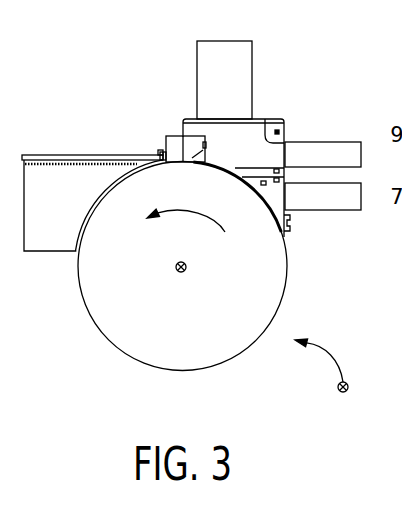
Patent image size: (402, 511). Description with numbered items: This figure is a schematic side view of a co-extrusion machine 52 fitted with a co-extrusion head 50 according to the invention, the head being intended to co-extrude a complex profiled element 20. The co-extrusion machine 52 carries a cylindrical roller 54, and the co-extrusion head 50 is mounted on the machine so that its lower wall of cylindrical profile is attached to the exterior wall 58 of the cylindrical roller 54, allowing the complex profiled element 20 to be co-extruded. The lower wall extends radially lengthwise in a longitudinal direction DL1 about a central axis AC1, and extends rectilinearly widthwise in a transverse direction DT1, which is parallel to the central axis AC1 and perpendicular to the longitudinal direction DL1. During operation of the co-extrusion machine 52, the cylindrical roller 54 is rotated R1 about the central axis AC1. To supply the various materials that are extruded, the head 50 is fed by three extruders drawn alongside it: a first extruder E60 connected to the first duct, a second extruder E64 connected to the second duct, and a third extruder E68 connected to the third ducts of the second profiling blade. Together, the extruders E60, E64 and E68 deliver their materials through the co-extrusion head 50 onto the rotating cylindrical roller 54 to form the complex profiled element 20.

The complex profiled element 20 is at (73, 155).
The co-extrusion head 50 is at (260, 121).
The co-extrusion machine 52 is at (96, 352).
The cylindrical roller 54 is at (277, 278).
The exterior wall of the cylindrical roller 58 is at (288, 262).
The third extruder E68 is at (209, 91).
The second extruder E64 is at (310, 167).
The first extruder E60 is at (310, 208).
The central axis AC1 is at (184, 271).
The rotation of the cylindrical roller R1 is at (187, 208).
The longitudinal direction DL1 is at (335, 357).
The transverse direction DT1 is at (368, 385).